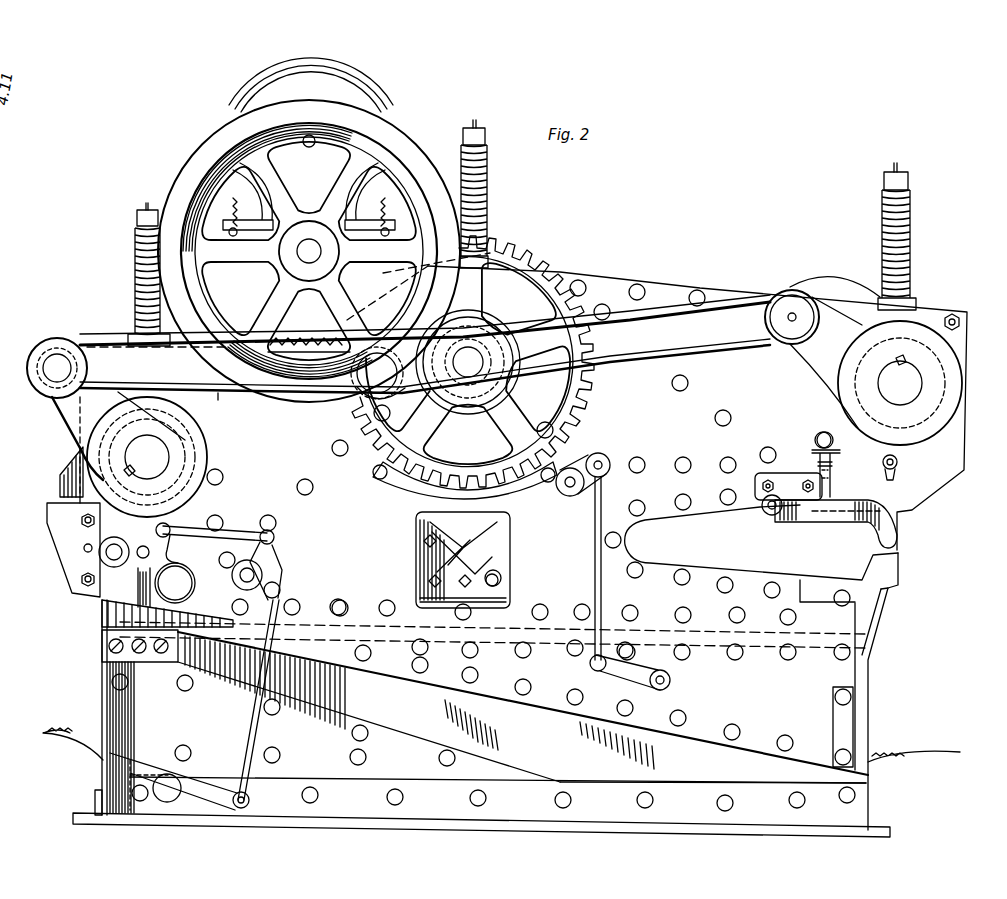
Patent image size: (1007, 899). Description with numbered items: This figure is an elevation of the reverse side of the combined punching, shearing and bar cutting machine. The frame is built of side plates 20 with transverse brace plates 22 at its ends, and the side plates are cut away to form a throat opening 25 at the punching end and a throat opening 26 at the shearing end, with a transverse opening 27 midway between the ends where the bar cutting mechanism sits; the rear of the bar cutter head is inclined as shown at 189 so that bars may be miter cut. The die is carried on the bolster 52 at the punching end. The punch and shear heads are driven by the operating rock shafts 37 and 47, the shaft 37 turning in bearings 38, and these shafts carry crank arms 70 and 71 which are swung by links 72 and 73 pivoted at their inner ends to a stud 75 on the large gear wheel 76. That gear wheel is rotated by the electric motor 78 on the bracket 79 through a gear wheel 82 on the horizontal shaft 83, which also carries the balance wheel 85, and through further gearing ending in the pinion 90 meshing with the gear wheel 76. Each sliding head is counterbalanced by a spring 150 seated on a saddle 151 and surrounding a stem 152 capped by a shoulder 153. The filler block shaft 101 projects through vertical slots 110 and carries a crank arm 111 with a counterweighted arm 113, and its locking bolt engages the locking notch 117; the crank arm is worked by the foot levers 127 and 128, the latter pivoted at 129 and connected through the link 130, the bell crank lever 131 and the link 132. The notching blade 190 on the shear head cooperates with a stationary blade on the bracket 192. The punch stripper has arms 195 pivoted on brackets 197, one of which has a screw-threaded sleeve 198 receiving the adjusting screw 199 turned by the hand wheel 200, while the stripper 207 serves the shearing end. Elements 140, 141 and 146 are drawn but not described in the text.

The side plates 20 is at (941, 310).
The transverse brace plates 22 is at (870, 703).
The throat opening 25 is at (761, 542).
The throat opening 26 is at (100, 605).
The transverse opening 27 is at (512, 548).
The operating rock shaft 37 is at (900, 383).
The bearings 38 is at (905, 340).
The operating rock shaft 47 is at (147, 457).
The die support or bolster 52 is at (890, 590).
The crank arm 70 is at (835, 352).
The crank arm 71 is at (72, 412).
The link 72 is at (449, 341).
The link 73 is at (218, 395).
The stud 75 is at (350, 400).
The gear wheel 76 is at (537, 265).
The electric motor 78 is at (376, 97).
The bracket 79 is at (237, 228).
The gear wheel 82 is at (230, 212).
The horizontal shaft 83 is at (312, 251).
The balance wheel 85 is at (420, 128).
The pinion 90 is at (338, 293).
The filler block shaft 101 is at (150, 553).
The vertical slots 110 is at (118, 583).
The crank arm 111 is at (156, 530).
The counterweighted arm 113 is at (194, 586).
The locking notch 117 is at (100, 640).
The foot lever 127 is at (878, 748).
The foot lever 128 is at (72, 735).
The pivot 129 is at (168, 788).
The link 130 is at (255, 725).
The bell crank lever 131 is at (272, 558).
The link 132 is at (238, 520).
The rod 140 is at (594, 551).
The pivot boss 141 is at (602, 460).
The shaker plate 146 is at (518, 700).
The spring 150 is at (135, 246).
The saddle 151 is at (474, 262).
The stem 152 is at (503, 154).
The shoulder 153 is at (137, 218).
The inclined cut-away portion 189 is at (488, 558).
The reciprocating notching blade 190 is at (60, 483).
The bracket 192 is at (58, 542).
The stripper arms 195 is at (846, 524).
The brackets 197 is at (780, 485).
The screw-threaded sleeve 198 is at (832, 478).
The adjusting screw 199 is at (833, 462).
The hand wheel 200 is at (822, 445).
The stripper 207 is at (100, 660).